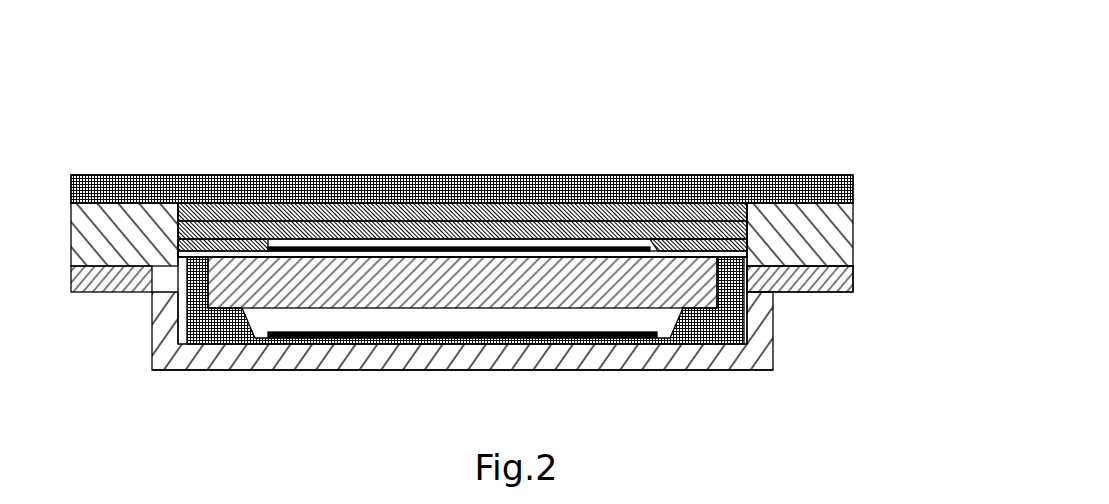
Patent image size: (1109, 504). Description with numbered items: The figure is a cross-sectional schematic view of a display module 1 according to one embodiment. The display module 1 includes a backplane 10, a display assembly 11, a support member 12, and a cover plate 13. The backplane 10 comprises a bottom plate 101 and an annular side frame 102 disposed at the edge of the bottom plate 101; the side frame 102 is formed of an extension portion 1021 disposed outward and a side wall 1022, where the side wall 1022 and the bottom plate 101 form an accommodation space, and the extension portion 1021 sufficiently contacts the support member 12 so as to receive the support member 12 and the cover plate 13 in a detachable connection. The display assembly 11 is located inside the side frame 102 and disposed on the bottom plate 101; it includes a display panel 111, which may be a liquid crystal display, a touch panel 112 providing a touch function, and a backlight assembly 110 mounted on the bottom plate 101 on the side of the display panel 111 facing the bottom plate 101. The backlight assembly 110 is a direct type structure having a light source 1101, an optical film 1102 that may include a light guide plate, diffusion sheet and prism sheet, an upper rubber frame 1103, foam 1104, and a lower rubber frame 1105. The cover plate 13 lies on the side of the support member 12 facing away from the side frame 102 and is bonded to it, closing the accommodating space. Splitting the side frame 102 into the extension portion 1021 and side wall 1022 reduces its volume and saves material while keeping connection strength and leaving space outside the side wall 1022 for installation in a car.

The display module 1 is at (914, 47).
The backplane 10 is at (152, 348).
The bottom plate 101 is at (595, 352).
The side frame 102 is at (918, 272).
The extension portion 1021 is at (830, 279).
The side wall 1022 is at (763, 334).
The display assembly 11 is at (618, 73).
The backlight assembly 110 is at (513, 118).
The light source 1101 is at (540, 333).
The optical film 1102 is at (573, 282).
The upper rubber frame 1103 is at (653, 247).
The foam 1104 is at (675, 243).
The lower rubber frame 1105 is at (722, 250).
The display panel 111 is at (435, 230).
The touch panel 112 is at (308, 212).
The support member 12 is at (853, 238).
The cover plate 13 is at (853, 193).